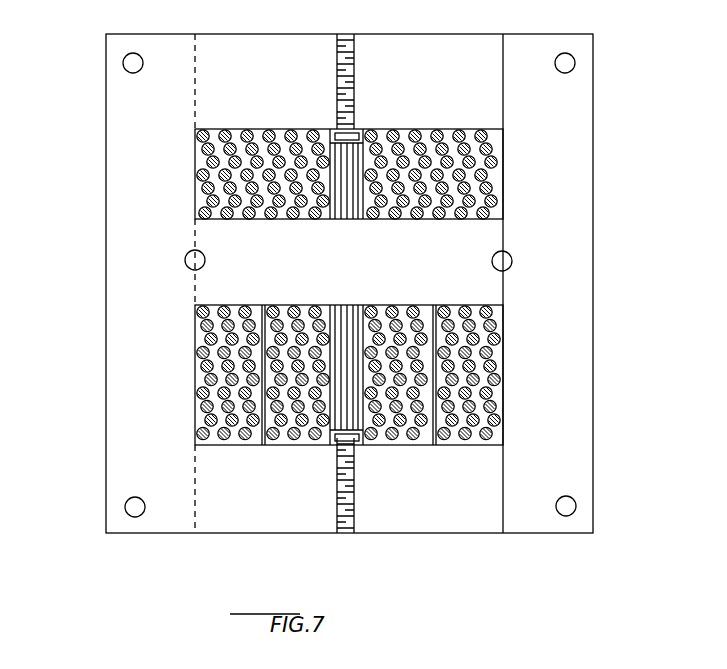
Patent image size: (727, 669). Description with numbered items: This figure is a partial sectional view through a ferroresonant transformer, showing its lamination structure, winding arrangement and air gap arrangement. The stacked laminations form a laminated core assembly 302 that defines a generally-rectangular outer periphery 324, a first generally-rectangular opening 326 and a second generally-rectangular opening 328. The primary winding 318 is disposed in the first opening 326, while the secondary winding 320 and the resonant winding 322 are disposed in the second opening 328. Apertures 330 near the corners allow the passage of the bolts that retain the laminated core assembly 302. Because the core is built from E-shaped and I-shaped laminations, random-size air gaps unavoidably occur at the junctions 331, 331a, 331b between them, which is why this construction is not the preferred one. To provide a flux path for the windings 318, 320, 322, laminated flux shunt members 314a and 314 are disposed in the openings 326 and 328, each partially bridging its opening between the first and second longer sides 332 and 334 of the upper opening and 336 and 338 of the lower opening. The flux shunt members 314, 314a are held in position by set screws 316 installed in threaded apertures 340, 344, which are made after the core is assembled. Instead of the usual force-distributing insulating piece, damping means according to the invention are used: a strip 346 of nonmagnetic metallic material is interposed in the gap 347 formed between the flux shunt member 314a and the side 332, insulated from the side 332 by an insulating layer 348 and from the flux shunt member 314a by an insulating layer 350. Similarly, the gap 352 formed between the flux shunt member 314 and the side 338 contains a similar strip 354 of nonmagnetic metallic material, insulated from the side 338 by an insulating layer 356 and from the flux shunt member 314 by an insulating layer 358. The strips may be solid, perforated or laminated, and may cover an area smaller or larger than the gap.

The laminated core assembly 302 is at (100, 97).
The laminated flux shunt member 314 is at (364, 302).
The laminated flux shunt member 314a is at (340, 222).
The set screw 316 is at (347, 110).
The primary winding 318 is at (503, 192).
The secondary winding 320 is at (503, 410).
The resonant winding 322 is at (503, 360).
The generally-rectangular outer periphery 324 is at (593, 116).
The first generally-rectangular opening 326 is at (477, 127).
The second generally-rectangular opening 328 is at (452, 448).
The aperture 330 is at (133, 60).
The junction 331 is at (195, 515).
The junction 331a is at (195, 290).
The junction 331b is at (195, 117).
The first longer side 332 is at (235, 128).
The second longer side 334 is at (290, 220).
The first longer side 336 is at (252, 305).
The second longer side 338 is at (252, 445).
The threaded aperture 340 is at (338, 62).
The threaded aperture 344 is at (355, 512).
The strip of nonmagnetic metallic material 346 is at (350, 137).
The gap 347 is at (372, 127).
The insulating layer 348 is at (336, 130).
The insulating layer 350 is at (332, 130).
The gap 352 is at (326, 448).
The strip of nonmagnetic metallic material 354 is at (352, 440).
The insulating layer 356 is at (338, 447).
The insulating layer 358 is at (316, 445).